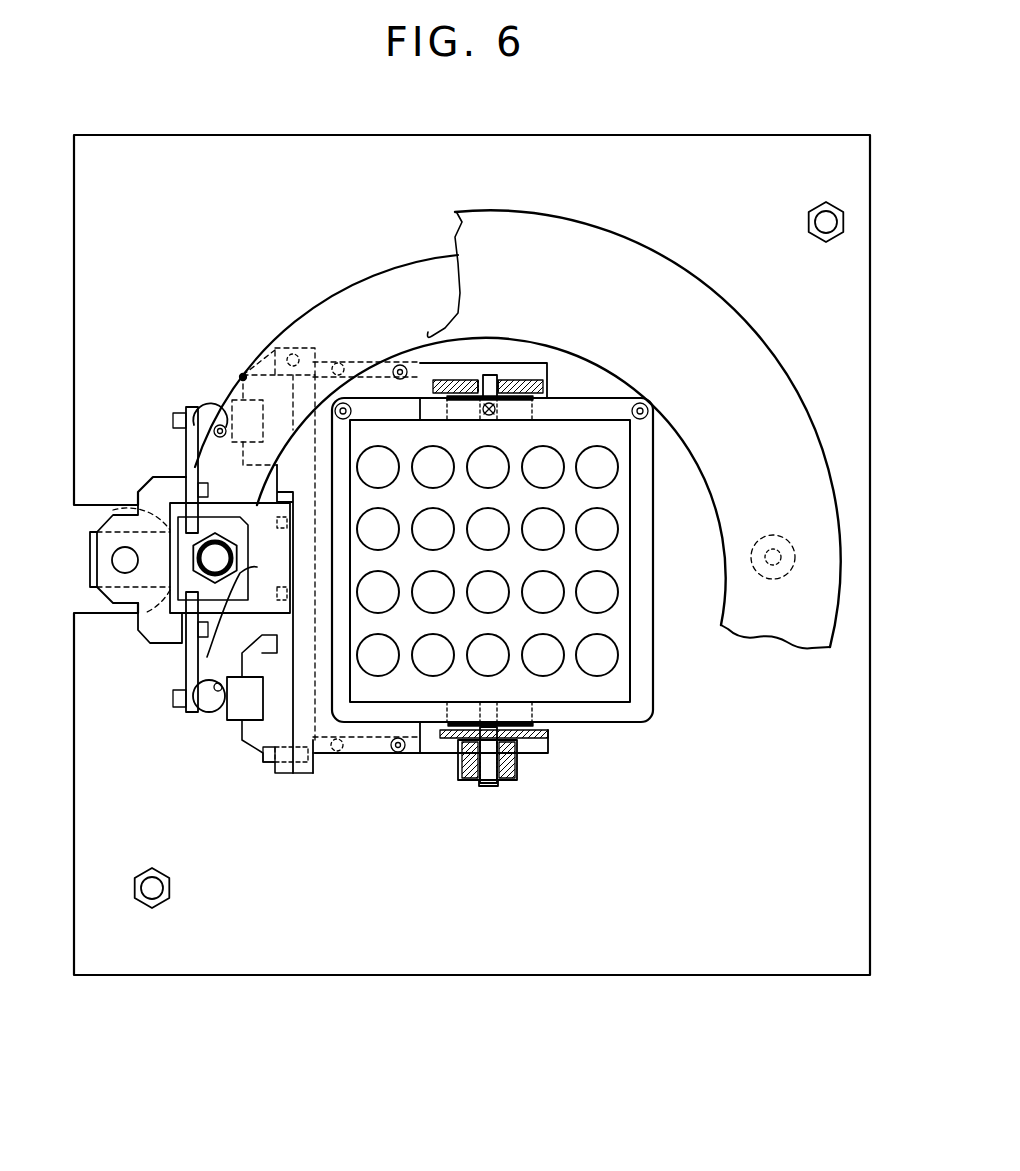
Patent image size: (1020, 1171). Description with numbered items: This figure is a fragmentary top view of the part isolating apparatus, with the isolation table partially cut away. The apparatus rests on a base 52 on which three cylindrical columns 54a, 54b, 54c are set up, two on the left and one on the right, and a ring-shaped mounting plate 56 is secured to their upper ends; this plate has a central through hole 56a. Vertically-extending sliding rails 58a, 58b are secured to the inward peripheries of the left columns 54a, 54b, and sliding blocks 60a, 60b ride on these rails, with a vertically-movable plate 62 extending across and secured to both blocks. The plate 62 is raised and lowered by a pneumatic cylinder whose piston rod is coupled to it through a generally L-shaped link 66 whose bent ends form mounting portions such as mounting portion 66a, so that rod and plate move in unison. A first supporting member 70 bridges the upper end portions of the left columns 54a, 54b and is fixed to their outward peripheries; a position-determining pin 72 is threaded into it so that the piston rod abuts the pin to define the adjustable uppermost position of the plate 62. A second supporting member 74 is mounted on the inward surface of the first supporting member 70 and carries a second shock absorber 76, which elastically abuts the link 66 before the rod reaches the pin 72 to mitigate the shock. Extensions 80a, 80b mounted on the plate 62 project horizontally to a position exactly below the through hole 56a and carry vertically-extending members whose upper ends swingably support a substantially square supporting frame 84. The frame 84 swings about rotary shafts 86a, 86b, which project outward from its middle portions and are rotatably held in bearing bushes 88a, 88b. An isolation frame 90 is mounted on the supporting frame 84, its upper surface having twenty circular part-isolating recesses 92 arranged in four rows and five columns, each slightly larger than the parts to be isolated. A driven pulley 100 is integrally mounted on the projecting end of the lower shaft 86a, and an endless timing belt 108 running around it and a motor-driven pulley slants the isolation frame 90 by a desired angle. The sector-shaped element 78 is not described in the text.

The base 52 is at (533, 960).
The cylindrical column 54a is at (205, 702).
The cylindrical column 54b is at (208, 405).
The cylindrical column 54c is at (787, 575).
The ring-shaped mounting plate 56 is at (416, 262).
The through hole 56a is at (425, 330).
The sliding rail 58a is at (240, 712).
The sliding rail 58b is at (252, 360).
The sliding block 60a is at (287, 740).
The sliding block 60b is at (283, 345).
The vertically-movable plate 62 is at (373, 755).
The link 66 is at (270, 548).
The mounting portion 66a is at (88, 552).
The first supporting member 70 is at (162, 632).
The position-determining pin 72 is at (123, 567).
The second supporting member 74 is at (193, 665).
The second shock absorber 76 is at (248, 582).
The sector plate 78 is at (643, 238).
The extension 80a is at (443, 755).
The extension 80b is at (475, 370).
The supporting frame 84 is at (650, 662).
The rotary shaft 86a is at (490, 786).
The rotary shaft 86b is at (490, 377).
The bearing bush 88a is at (513, 780).
The bearing bush 88b is at (462, 382).
The isolation frame 90 is at (632, 512).
The part-isolating recesses 92 is at (612, 460).
The driven pulley 100 is at (468, 782).
The endless timing belt 108 is at (517, 767).